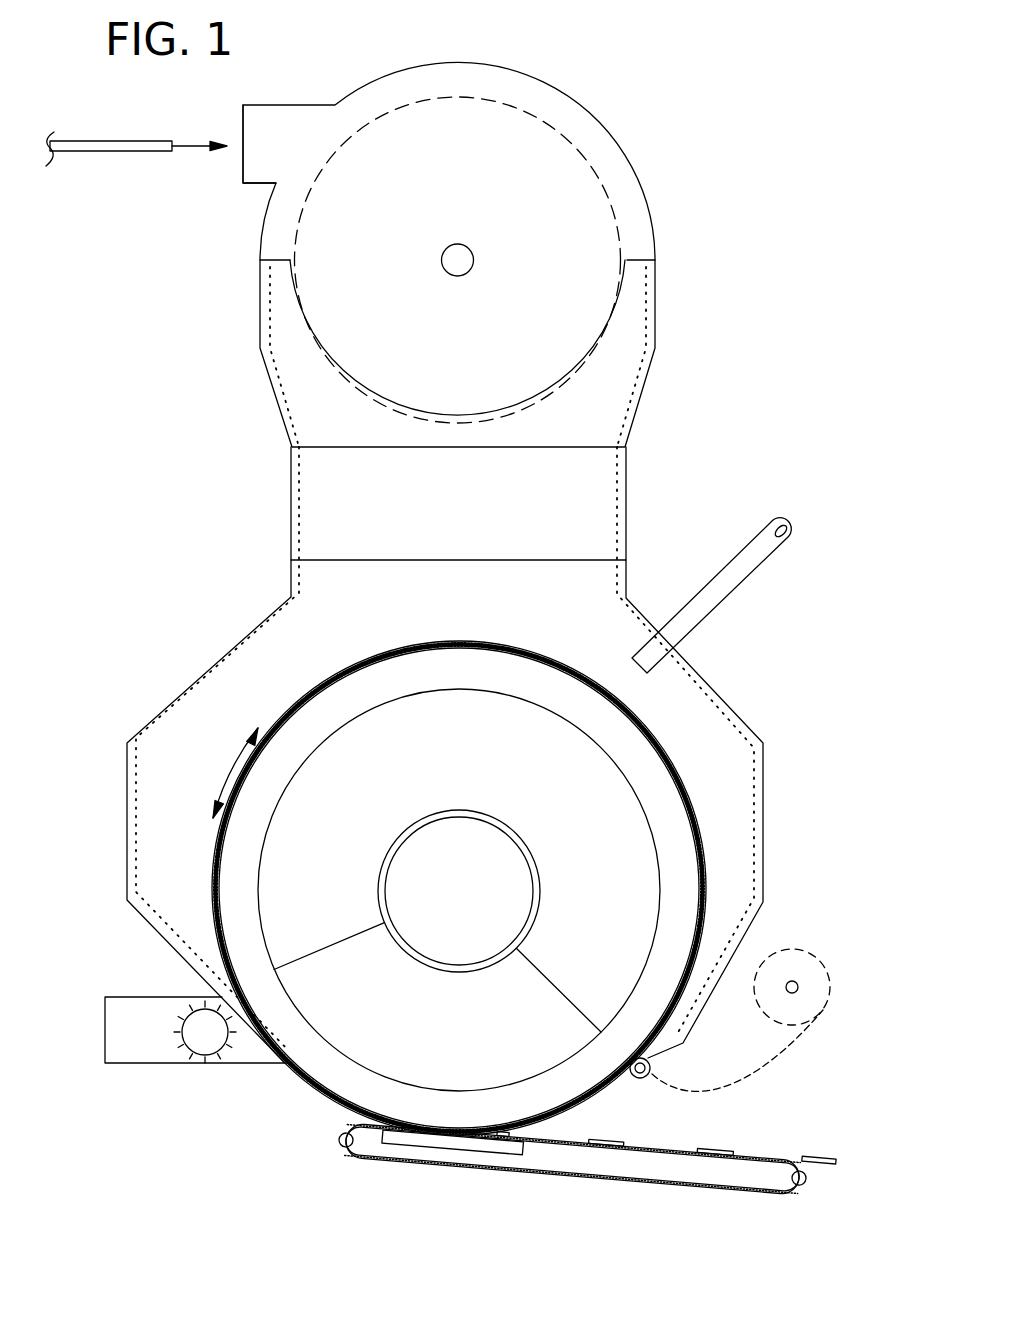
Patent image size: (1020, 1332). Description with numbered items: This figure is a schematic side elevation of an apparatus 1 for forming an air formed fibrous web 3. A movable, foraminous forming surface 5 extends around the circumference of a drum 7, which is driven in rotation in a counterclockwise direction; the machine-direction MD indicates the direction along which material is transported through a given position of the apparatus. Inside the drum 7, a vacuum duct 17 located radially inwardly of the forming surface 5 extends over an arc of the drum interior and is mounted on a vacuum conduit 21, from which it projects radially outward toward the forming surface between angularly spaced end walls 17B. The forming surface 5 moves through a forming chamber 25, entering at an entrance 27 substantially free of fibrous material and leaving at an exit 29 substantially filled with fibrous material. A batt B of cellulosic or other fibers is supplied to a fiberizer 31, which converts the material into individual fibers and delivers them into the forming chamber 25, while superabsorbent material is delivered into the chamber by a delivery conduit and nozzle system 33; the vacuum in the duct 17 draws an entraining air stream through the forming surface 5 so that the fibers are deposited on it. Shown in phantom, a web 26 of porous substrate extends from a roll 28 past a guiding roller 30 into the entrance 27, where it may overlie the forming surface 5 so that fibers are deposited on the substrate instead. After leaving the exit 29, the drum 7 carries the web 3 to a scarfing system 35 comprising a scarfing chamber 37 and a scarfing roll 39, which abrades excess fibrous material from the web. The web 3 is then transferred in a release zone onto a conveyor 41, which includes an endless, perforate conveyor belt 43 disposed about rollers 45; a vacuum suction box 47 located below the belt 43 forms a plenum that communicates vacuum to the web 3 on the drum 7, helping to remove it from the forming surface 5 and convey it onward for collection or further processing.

The apparatus 1 is at (698, 210).
The fibrous web 3 is at (666, 1147).
The foraminous forming surface 5 is at (595, 1116).
The drum 7 is at (288, 1092).
The vacuum duct 17 is at (486, 772).
The end walls 17B is at (350, 939).
The vacuum conduit 21 is at (432, 963).
The forming chamber 25 is at (215, 697).
The web of substrate 26 is at (763, 1075).
The entrance 27 is at (627, 1090).
The roll 28 is at (807, 970).
The exit 29 is at (183, 976).
The roller 30 is at (652, 1072).
The fiberizer 31 is at (272, 201).
The delivery conduit and nozzle system 33 is at (723, 605).
The scarfing system 35 is at (160, 1045).
The scarfing chamber 37 is at (147, 1065).
The scarfing roll 39 is at (202, 1045).
The conveyor 41 is at (587, 1192).
The conveyor belt 43 is at (573, 1159).
The rollers 45 is at (572, 1158).
The vacuum suction box 47 is at (453, 1142).
The batt B is at (118, 140).
The machine-direction MD is at (232, 770).